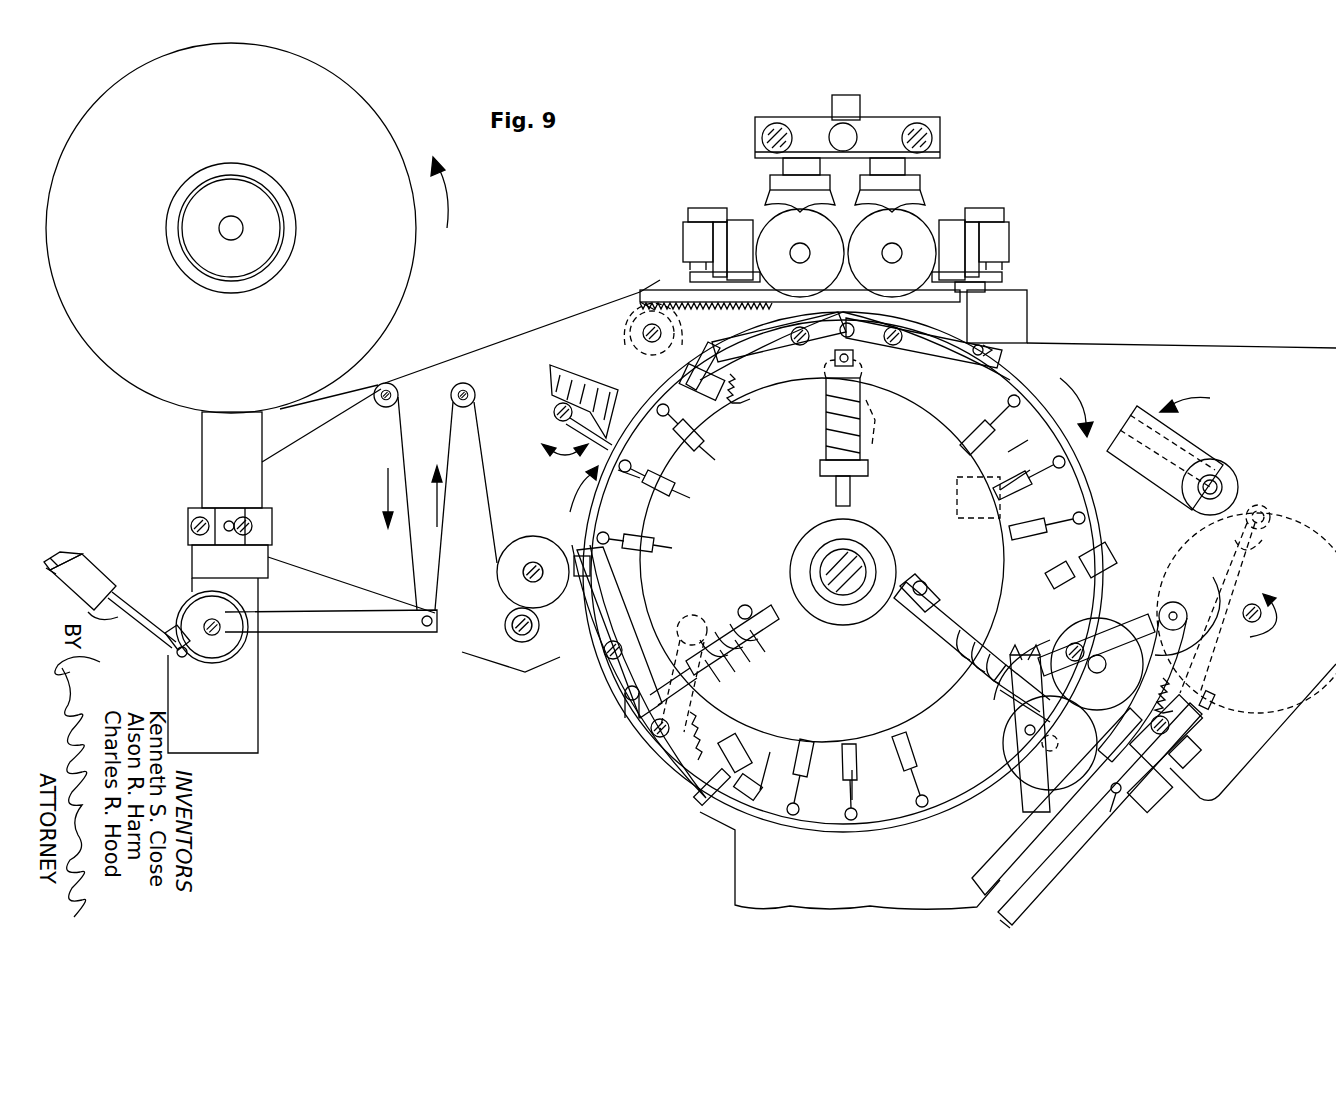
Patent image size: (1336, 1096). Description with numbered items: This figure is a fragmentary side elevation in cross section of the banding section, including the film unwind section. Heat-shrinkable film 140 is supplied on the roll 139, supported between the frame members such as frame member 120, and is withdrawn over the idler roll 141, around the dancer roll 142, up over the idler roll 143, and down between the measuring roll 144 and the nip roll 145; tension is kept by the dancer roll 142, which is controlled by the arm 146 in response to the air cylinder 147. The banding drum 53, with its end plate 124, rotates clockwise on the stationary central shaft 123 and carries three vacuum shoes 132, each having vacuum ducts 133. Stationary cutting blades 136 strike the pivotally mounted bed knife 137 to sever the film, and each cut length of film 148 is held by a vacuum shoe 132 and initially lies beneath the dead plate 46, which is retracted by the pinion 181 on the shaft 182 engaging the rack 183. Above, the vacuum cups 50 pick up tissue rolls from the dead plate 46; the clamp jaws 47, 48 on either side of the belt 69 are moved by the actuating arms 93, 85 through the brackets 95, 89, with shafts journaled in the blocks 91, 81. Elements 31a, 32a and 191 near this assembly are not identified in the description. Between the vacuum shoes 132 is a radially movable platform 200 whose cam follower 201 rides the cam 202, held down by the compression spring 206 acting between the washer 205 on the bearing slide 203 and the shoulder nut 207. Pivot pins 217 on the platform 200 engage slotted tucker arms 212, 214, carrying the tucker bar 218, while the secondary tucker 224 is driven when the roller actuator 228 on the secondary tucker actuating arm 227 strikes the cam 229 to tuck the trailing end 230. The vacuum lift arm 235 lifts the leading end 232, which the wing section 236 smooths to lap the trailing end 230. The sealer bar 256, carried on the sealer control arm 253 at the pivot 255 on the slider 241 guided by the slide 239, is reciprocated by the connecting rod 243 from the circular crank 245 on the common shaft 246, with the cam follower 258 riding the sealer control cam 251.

The roll 139 is at (374, 216).
The idler roll 141 is at (383, 406).
The idler roll 143 is at (458, 406).
The film 140 is at (400, 446).
The measuring roll 144 is at (545, 550).
The nip roll 145 is at (534, 642).
The arm 146 is at (342, 636).
The dancer roll 142 is at (418, 636).
The air cylinder 147 is at (78, 562).
The frame member 120 is at (530, 328).
The mounting post 191 is at (862, 104).
The vacuum cups 50 is at (768, 200).
The feed roller 31a is at (765, 220).
The feed roller 32a is at (930, 225).
The clamp jaw 47 is at (740, 220).
The clamp jaw 48 is at (952, 220).
The bracket 95 is at (690, 212).
The bracket 89 is at (1000, 212).
The actuating arm 93 is at (683, 238).
The actuating arm 85 is at (1009, 238).
The block 91 is at (685, 278).
The dead plate 46 is at (658, 278).
The belt 69 is at (985, 288).
The block 81 is at (1027, 306).
The cut length of film 148 is at (748, 318).
The shaft 182 is at (643, 333).
The rack 183 is at (635, 348).
The pinion 181 is at (632, 312).
The trailing end 230 is at (672, 368).
The bed knife 137 is at (600, 450).
The cutting blades 136 is at (700, 385).
The vacuum ducts 133 is at (680, 440).
The vacuum shoes 132 is at (600, 487).
The leading end 232 is at (1048, 393).
The cam 202 is at (796, 451).
The end plate 124 is at (956, 411).
The central shaft 123 is at (858, 552).
The cam 229 is at (957, 488).
The roller actuator 228 is at (868, 445).
The secondary tucker actuating arm 227 is at (820, 390).
The cam follower 201 is at (853, 358).
The platform 200 is at (918, 348).
The bearing slide 203 is at (775, 625).
The compression spring 206 is at (715, 622).
The shoulder nut 207 is at (748, 604).
The washer 205 is at (700, 680).
The tucker arm 214 is at (975, 620).
The pivot pin 217 is at (1010, 690).
The banding drum 53 is at (718, 790).
The tucker arm 212 is at (1022, 800).
The tucker bar 218 is at (1030, 825).
The secondary tucker 224 is at (1140, 625).
The wing section 236 is at (1216, 600).
The vacuum lift arm 235 is at (1148, 438).
The connecting rod 243 is at (1270, 512).
The circular crank 245 is at (1335, 634).
The common shaft 246 is at (1245, 598).
The sealer bar 256 is at (1172, 740).
The cam follower 258 is at (1185, 760).
The slider 241 is at (1142, 800).
The sealer control arm 253 is at (1118, 800).
The pivot 255 is at (1113, 814).
The slide 239 is at (1062, 868).
The sealer control cam 251 is at (990, 870).